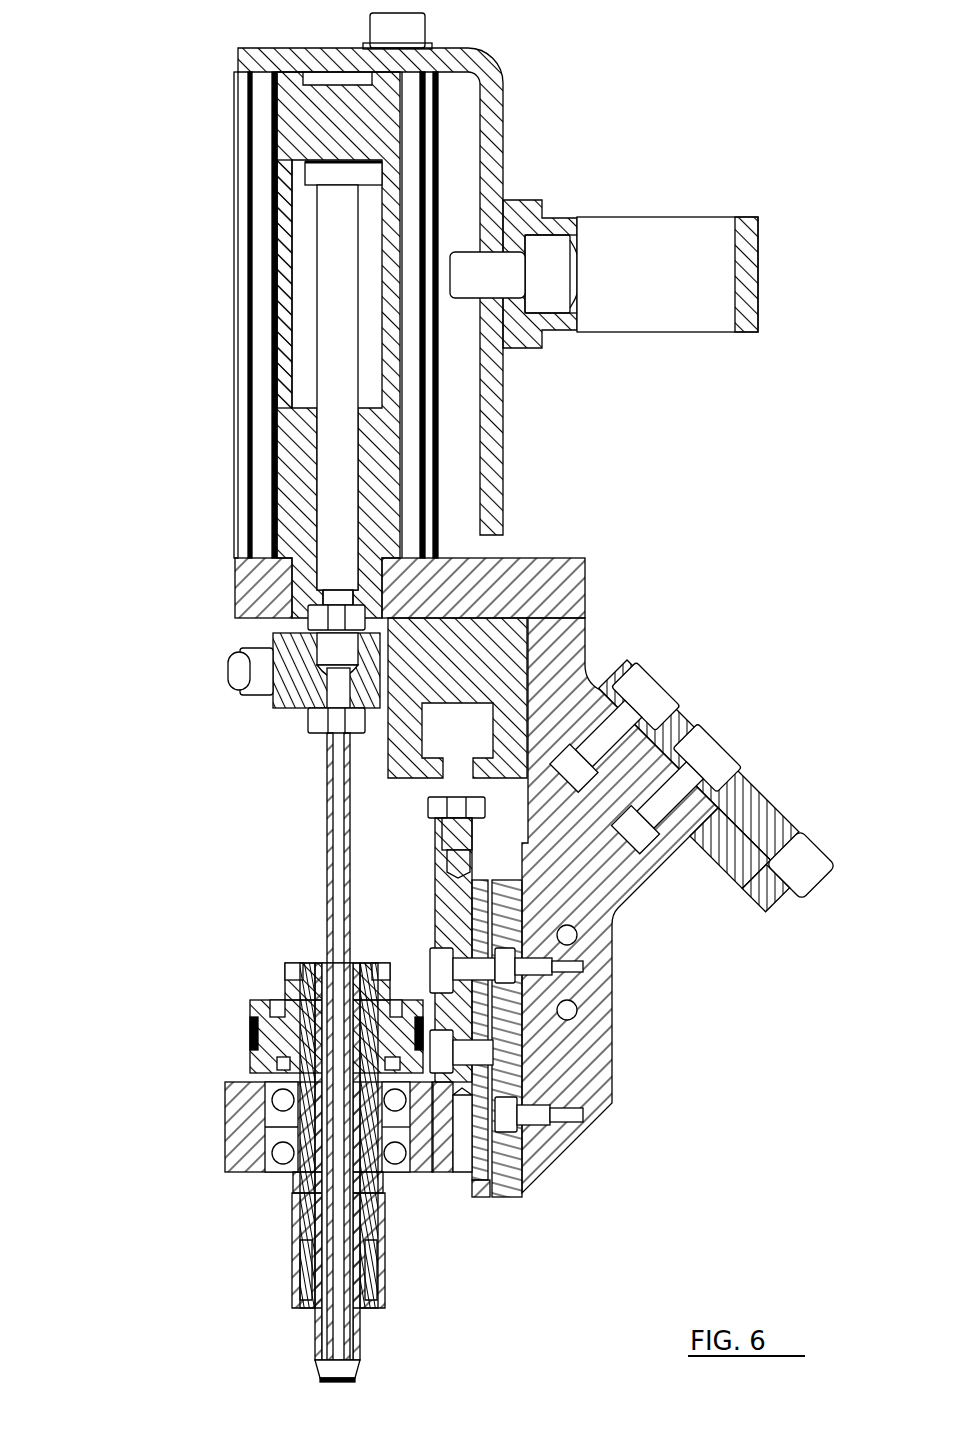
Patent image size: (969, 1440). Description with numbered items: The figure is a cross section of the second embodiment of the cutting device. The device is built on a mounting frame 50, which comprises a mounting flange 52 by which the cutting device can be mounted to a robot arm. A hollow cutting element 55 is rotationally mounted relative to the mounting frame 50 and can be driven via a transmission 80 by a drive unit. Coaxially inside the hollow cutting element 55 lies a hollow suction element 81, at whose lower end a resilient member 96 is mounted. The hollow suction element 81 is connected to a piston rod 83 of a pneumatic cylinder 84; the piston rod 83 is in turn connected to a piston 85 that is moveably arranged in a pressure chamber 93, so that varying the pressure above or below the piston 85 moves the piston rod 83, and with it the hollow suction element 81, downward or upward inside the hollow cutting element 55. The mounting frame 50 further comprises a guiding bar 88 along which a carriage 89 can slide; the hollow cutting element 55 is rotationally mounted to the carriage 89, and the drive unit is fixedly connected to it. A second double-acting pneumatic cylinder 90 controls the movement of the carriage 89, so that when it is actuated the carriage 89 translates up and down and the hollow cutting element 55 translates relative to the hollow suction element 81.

The pneumatic cylinder 84 is at (222, 343).
The piston 85 is at (313, 172).
The pressure chamber 93 is at (302, 273).
The piston rod 83 is at (340, 388).
The second double-acting pneumatic cylinder 90 is at (500, 642).
The mounting flange 52 is at (737, 838).
The mounting frame 50 is at (598, 1115).
The guiding bar 88 is at (515, 1195).
The transmission 80 is at (420, 1005).
The hollow suction element 81 is at (332, 878).
The carriage 89 is at (240, 1118).
The hollow cutting element 55 is at (318, 1333).
The resilient member 96 is at (320, 1375).